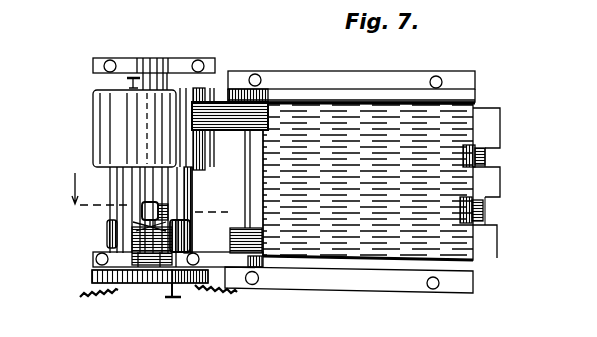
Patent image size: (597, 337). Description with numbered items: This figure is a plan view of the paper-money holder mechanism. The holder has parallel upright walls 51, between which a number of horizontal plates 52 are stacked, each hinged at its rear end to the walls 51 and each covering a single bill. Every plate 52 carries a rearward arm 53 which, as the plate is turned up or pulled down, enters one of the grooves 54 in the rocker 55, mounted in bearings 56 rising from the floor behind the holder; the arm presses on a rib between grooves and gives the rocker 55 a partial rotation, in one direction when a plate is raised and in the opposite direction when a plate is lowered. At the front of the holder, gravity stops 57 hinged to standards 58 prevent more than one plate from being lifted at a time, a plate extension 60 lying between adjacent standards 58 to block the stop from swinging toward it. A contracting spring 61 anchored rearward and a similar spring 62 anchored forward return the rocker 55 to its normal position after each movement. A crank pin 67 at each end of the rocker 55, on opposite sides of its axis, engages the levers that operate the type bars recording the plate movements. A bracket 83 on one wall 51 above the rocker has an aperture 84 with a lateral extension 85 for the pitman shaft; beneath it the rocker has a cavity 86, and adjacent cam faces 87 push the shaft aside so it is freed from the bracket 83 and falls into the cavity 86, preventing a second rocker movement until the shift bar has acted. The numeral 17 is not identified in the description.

The axis line 17 is at (144, 197).
The upright walls 51 is at (397, 98).
The horizontal plates 52 is at (305, 115).
The rearward arm 53 is at (217, 100).
The grooves 54 is at (187, 100).
The rocker 55 is at (125, 123).
The bearings 56 is at (162, 60).
The gravity stops 57 is at (486, 155).
The standards 58 is at (476, 146).
The extension 60 is at (498, 175).
The contracting spring 61 is at (88, 297).
The spring 62 is at (214, 296).
The crank pin 67 is at (127, 82).
The bracket 83 is at (174, 238).
The aperture 84 is at (170, 205).
The lateral extension 85 is at (191, 221).
The cavity 86 is at (143, 203).
The cam faces 87 is at (143, 232).